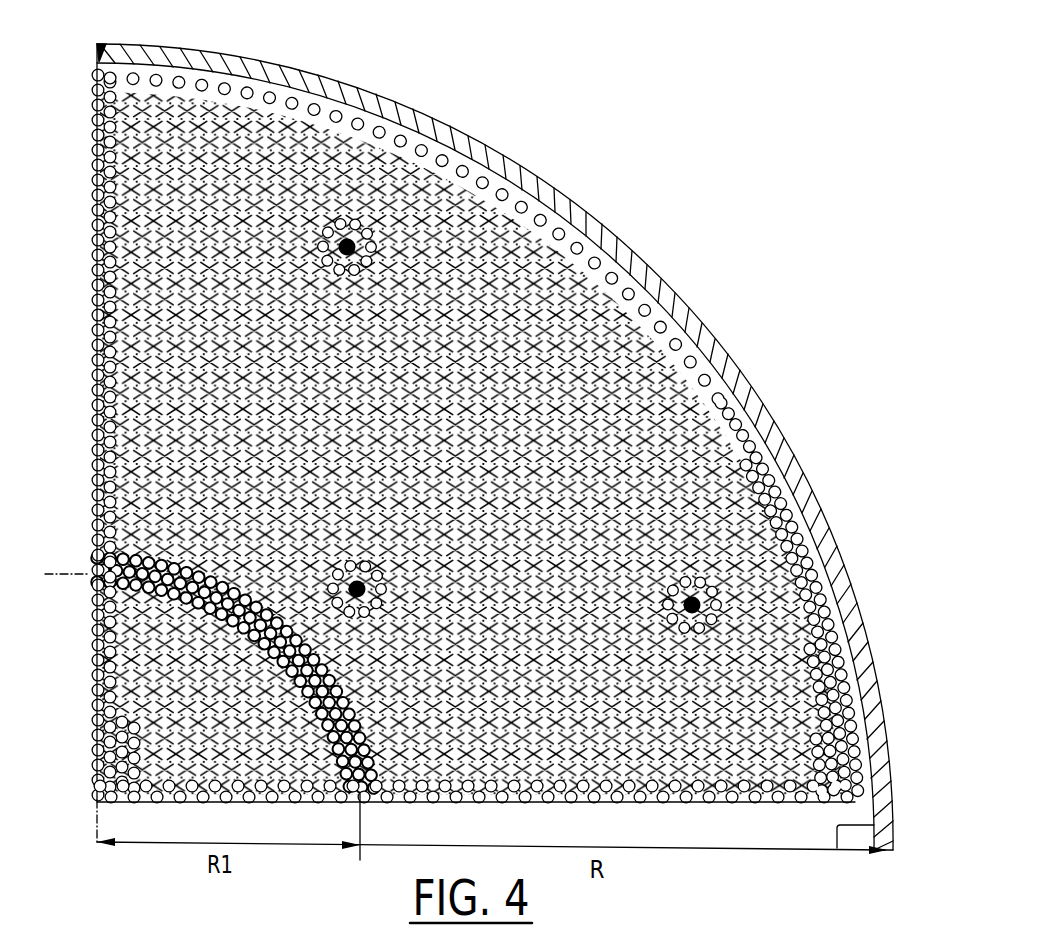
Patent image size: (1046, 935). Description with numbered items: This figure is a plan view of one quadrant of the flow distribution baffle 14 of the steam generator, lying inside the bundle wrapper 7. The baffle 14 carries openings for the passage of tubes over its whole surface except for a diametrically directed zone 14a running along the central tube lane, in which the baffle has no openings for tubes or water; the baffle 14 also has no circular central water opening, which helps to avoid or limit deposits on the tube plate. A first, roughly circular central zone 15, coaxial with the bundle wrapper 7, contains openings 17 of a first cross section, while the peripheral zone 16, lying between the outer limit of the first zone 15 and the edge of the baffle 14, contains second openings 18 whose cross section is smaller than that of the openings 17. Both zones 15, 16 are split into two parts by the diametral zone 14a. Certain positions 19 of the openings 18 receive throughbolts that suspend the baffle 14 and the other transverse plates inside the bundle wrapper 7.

The bundle wrapper 7 is at (180, 58).
The flow distribution baffle 14 is at (678, 347).
The diametral zone 14a is at (485, 825).
The first zone 15 is at (210, 676).
The peripheral zone 16 is at (490, 440).
The openings 17 is at (97, 772).
The second openings 18 is at (818, 592).
The positions 19 is at (692, 605).